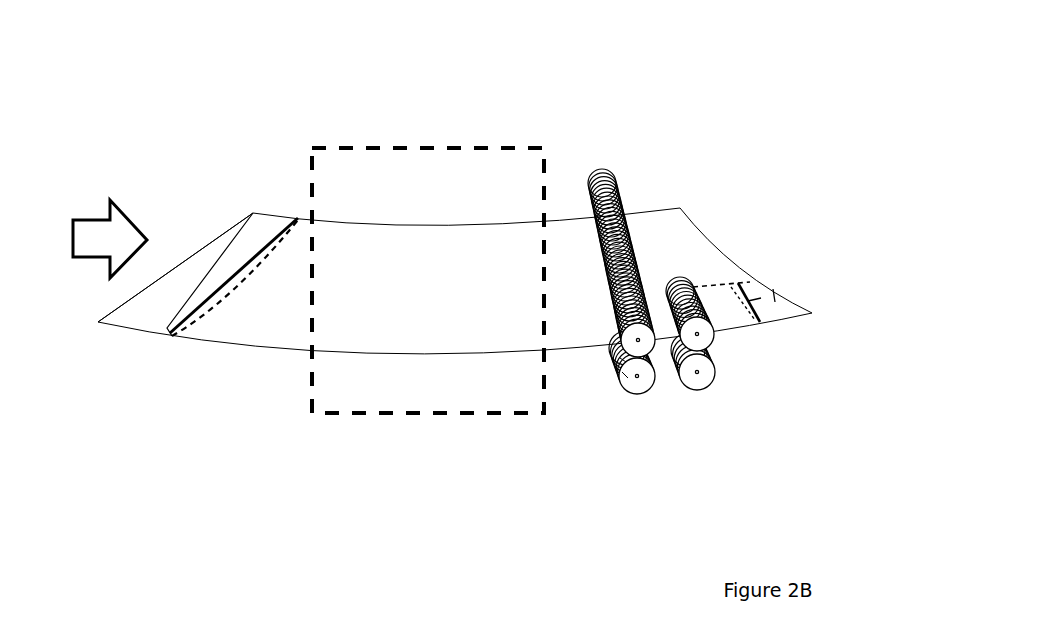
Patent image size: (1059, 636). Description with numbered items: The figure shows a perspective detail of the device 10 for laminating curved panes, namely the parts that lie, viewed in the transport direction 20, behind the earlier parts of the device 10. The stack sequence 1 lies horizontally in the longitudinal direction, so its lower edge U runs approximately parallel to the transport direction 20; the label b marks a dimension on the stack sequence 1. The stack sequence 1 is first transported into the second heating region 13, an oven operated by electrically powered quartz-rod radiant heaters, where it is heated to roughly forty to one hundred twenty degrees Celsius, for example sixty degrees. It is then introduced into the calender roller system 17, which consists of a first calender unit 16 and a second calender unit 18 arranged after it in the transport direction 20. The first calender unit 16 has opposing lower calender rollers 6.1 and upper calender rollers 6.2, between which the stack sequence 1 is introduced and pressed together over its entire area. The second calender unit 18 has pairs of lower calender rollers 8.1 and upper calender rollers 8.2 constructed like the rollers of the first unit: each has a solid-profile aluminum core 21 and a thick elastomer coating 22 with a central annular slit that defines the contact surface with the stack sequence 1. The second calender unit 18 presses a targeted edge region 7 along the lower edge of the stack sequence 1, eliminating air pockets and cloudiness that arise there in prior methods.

The device 10 is at (162, 120).
The stack sequence 1 is at (242, 220).
The width of strip b is at (230, 273).
The second heating region 13 is at (362, 138).
The calender roller system 17 is at (652, 168).
The first calender unit 16 is at (595, 462).
The second calender unit 18 is at (685, 462).
The lower calender roller 6.1 is at (631, 378).
The upper calender roller 6.2 is at (622, 345).
The lower calender roller 8.1 is at (705, 377).
The upper calender roller 8.2 is at (710, 340).
The core 21 is at (627, 376).
The elastomer coating 22 is at (623, 363).
The edge region 7 is at (782, 313).
The transport direction 20 is at (110, 239).
The lower edge U is at (217, 347).